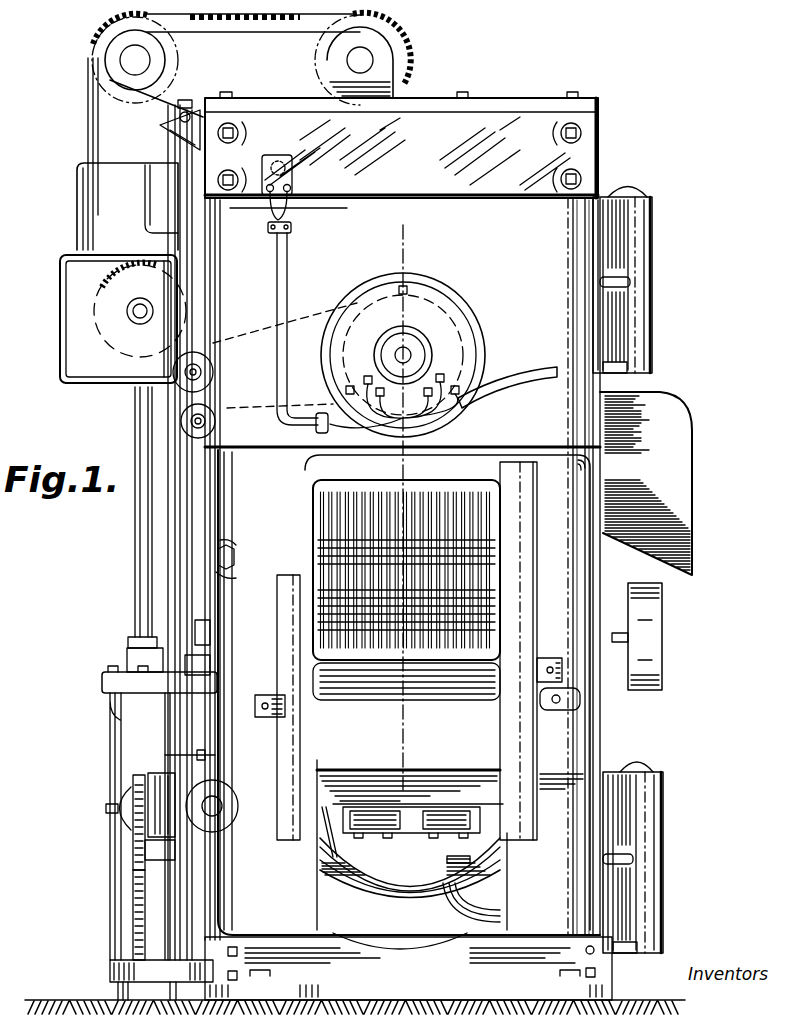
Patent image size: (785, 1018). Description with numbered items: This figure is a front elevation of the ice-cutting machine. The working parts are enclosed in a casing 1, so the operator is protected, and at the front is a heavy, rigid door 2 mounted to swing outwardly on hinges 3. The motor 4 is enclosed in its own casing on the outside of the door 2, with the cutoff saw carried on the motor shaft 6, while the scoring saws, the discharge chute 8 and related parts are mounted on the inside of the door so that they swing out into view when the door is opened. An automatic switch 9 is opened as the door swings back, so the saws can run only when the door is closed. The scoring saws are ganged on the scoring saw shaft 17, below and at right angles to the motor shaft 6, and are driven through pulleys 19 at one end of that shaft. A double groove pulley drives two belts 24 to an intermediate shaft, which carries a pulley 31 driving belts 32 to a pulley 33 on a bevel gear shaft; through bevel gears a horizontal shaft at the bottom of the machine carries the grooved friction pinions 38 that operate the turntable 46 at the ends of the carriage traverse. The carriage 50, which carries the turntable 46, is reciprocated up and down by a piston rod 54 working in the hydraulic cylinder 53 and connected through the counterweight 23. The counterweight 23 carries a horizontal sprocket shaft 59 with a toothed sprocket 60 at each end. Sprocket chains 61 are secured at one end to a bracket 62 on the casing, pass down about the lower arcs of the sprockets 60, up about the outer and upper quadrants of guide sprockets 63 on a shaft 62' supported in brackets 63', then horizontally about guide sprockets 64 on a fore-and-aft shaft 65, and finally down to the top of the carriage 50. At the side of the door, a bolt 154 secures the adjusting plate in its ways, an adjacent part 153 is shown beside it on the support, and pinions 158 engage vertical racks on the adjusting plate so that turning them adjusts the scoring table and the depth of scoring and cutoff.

The casing 1 is at (523, 107).
The door 2 is at (522, 203).
The hinges 3 is at (650, 232).
The motor 4 is at (463, 310).
The motor shaft 6 is at (394, 241).
The discharge chute 8 is at (505, 447).
The automatic switch 9 is at (296, 162).
The scoring saw shaft 17 is at (213, 640).
The pulleys 19 is at (212, 662).
The counterweight 23 is at (108, 372).
The belts 24 is at (165, 716).
The pulley 31 is at (135, 915).
The belts 32 is at (133, 856).
The pulley 33 is at (120, 810).
The grooved friction pinions 38 is at (222, 806).
The turntable 46 is at (428, 850).
The carriage 50 is at (445, 883).
The hydraulic cylinder 53 is at (125, 742).
The piston rod 54 is at (134, 562).
The sprocket shaft 59 is at (130, 312).
The toothed sprocket 60 is at (95, 307).
The sprocket chains 61 is at (292, 20).
The bracket 62 is at (156, 125).
The shaft 62' is at (156, 60).
The guide sprockets 63 is at (112, 67).
The brackets 63' is at (259, 76).
The guide sprockets 64 is at (407, 42).
The shaft 65 is at (375, 60).
The bracket 153 is at (293, 776).
The bolt 154 is at (268, 718).
The pinions 158 is at (548, 664).